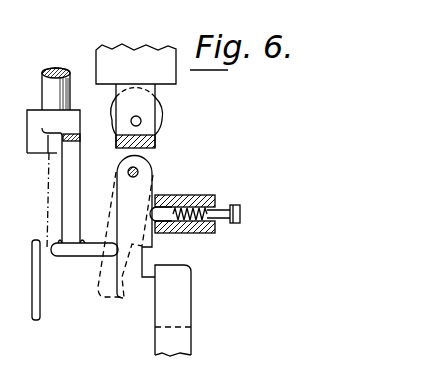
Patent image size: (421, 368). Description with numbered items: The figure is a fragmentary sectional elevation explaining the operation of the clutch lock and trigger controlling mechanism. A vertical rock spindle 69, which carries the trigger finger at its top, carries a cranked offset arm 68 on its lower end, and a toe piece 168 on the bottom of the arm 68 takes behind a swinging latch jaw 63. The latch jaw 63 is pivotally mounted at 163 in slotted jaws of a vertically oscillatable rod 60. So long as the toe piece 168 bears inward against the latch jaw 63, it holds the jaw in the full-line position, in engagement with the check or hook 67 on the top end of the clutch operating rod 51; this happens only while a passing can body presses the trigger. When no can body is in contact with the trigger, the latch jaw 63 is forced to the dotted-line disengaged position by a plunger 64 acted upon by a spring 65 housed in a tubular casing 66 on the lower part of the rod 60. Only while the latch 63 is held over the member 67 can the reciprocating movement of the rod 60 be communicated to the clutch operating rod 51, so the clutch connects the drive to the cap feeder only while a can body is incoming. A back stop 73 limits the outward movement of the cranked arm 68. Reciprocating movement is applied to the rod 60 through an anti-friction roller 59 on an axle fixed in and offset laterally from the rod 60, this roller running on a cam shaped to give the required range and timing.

The clutch operating rod 51 is at (188, 337).
The anti-friction roller 59 is at (161, 125).
The vertically oscillatable rod 60 is at (155, 99).
The swinging latch jaw 63 is at (126, 227).
The plunger 64 is at (168, 206).
The spring 65 is at (199, 204).
The tubular casing 66 is at (212, 231).
The check or hook 67 is at (173, 310).
The cranked offset arm 68 is at (73, 180).
The vertical rock spindle 69 is at (48, 92).
The back stop 73 is at (33, 290).
The pivot 163 is at (139, 171).
The toe piece 168 is at (75, 257).